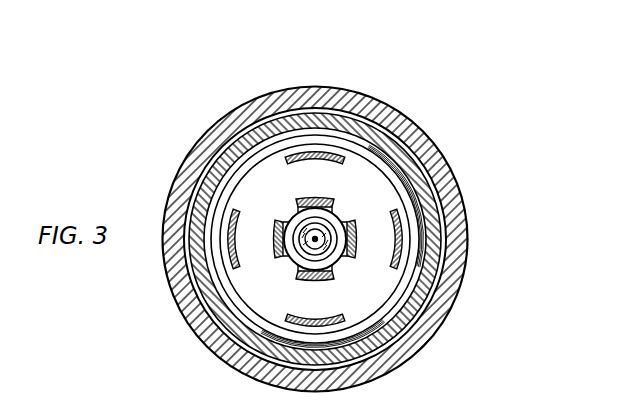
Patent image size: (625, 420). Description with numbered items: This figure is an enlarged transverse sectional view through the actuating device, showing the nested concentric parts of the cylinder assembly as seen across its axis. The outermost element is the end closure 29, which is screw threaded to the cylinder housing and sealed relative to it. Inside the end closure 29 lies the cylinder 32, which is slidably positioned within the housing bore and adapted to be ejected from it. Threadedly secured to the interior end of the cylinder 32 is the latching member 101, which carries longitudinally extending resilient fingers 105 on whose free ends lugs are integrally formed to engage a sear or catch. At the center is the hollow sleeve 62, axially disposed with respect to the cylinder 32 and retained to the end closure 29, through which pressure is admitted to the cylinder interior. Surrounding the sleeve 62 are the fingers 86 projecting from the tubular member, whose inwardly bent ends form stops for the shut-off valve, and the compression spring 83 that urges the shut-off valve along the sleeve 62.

The end closure 29 is at (447, 168).
The cylinder 32 is at (440, 229).
The latching member 101 is at (393, 276).
The resilient fingers 105 is at (330, 157).
The fingers 86 is at (327, 203).
The hollow sleeve 62 is at (303, 257).
The compression spring 83 is at (305, 227).